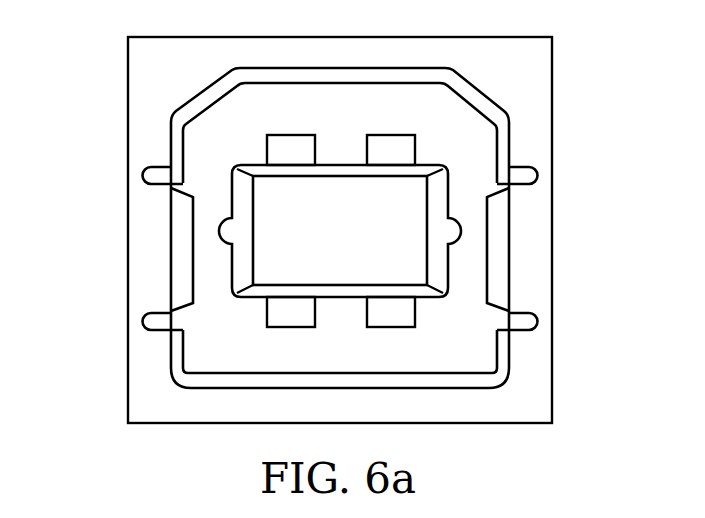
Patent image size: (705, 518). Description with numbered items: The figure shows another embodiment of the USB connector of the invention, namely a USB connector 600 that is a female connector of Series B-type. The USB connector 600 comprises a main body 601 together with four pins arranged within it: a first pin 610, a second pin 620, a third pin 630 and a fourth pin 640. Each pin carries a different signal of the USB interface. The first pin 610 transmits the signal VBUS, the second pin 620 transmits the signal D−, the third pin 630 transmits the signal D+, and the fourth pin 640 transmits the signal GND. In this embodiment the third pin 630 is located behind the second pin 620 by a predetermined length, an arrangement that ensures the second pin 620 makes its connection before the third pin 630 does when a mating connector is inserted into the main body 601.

The USB connector 600 is at (78, 26).
The main body 601 is at (543, 68).
The first pin 610 is at (407, 148).
The second pin 620 is at (275, 150).
The third pin 630 is at (275, 313).
The fourth pin 640 is at (405, 313).